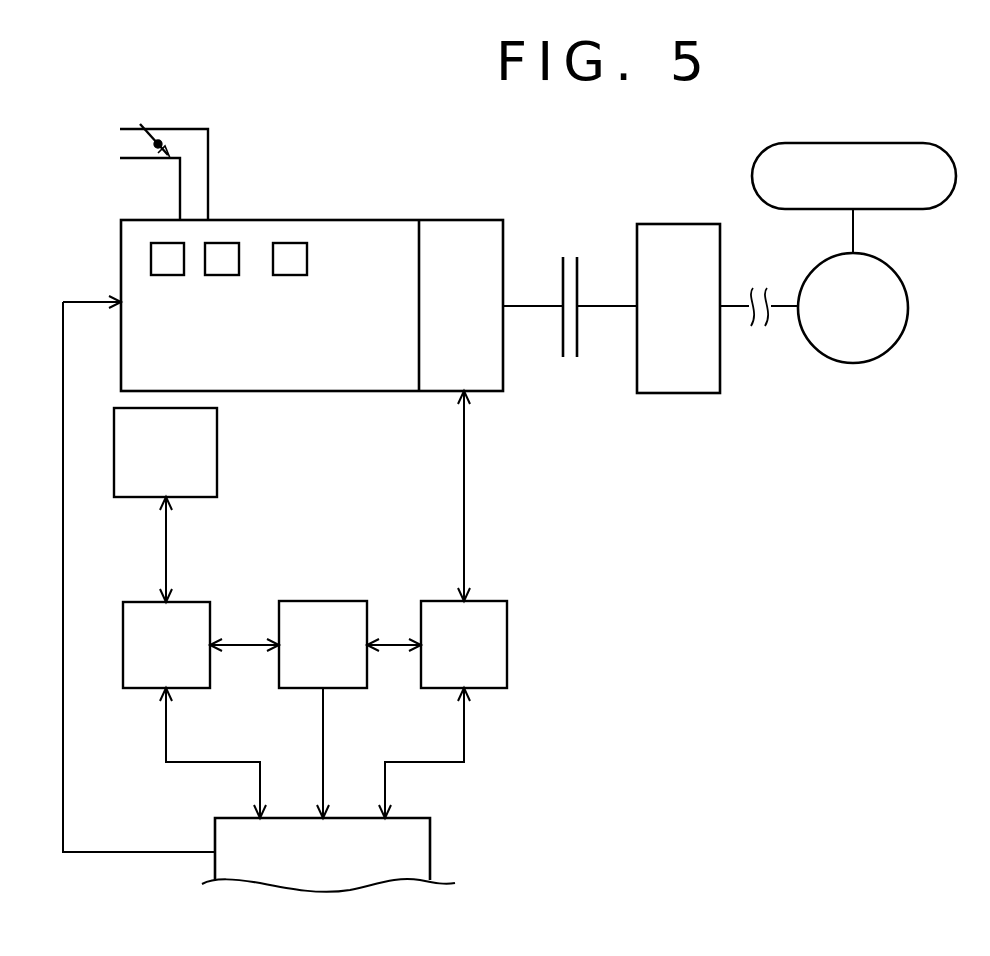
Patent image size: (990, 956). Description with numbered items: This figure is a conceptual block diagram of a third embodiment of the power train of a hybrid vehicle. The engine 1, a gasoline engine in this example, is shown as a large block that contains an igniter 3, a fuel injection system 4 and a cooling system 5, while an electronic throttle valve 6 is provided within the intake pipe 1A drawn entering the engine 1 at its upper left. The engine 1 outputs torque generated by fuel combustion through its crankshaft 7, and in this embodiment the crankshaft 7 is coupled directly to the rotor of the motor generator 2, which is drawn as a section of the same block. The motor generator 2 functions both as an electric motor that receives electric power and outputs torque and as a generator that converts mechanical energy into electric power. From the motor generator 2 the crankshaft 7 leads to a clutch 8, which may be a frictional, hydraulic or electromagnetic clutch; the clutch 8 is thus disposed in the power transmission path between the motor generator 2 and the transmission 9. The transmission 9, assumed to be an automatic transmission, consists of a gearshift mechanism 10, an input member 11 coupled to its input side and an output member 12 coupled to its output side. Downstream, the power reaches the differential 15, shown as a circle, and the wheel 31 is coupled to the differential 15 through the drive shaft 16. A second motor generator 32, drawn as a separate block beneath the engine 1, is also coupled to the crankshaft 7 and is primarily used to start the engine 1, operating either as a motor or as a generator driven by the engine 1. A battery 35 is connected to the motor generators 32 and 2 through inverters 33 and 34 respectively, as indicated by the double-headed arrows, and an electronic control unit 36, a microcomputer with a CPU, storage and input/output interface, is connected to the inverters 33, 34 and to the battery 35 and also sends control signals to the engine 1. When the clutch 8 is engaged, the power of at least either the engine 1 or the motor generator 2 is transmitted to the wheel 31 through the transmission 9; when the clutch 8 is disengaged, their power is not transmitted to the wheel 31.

The engine 1 is at (300, 186).
The intake pipe 1A is at (142, 128).
The motor generator 2 is at (490, 232).
The igniter 3 is at (163, 275).
The fuel injection system 4 is at (217, 275).
The cooling system 5 is at (285, 275).
The electronic throttle valve 6 is at (147, 157).
The crankshaft 7 is at (528, 310).
The clutch 8 is at (570, 248).
The transmission 9 is at (697, 299).
The gearshift mechanism 10 is at (698, 395).
The input member 11 is at (601, 311).
The output member 12 is at (728, 310).
The differential 15 is at (848, 362).
The drive shaft 16 is at (853, 230).
The wheel 31 is at (850, 147).
The motor generator 32 is at (212, 445).
The inverter 33 is at (182, 612).
The inverter 34 is at (483, 630).
The battery 35 is at (323, 612).
The electronic control unit 36 is at (415, 847).